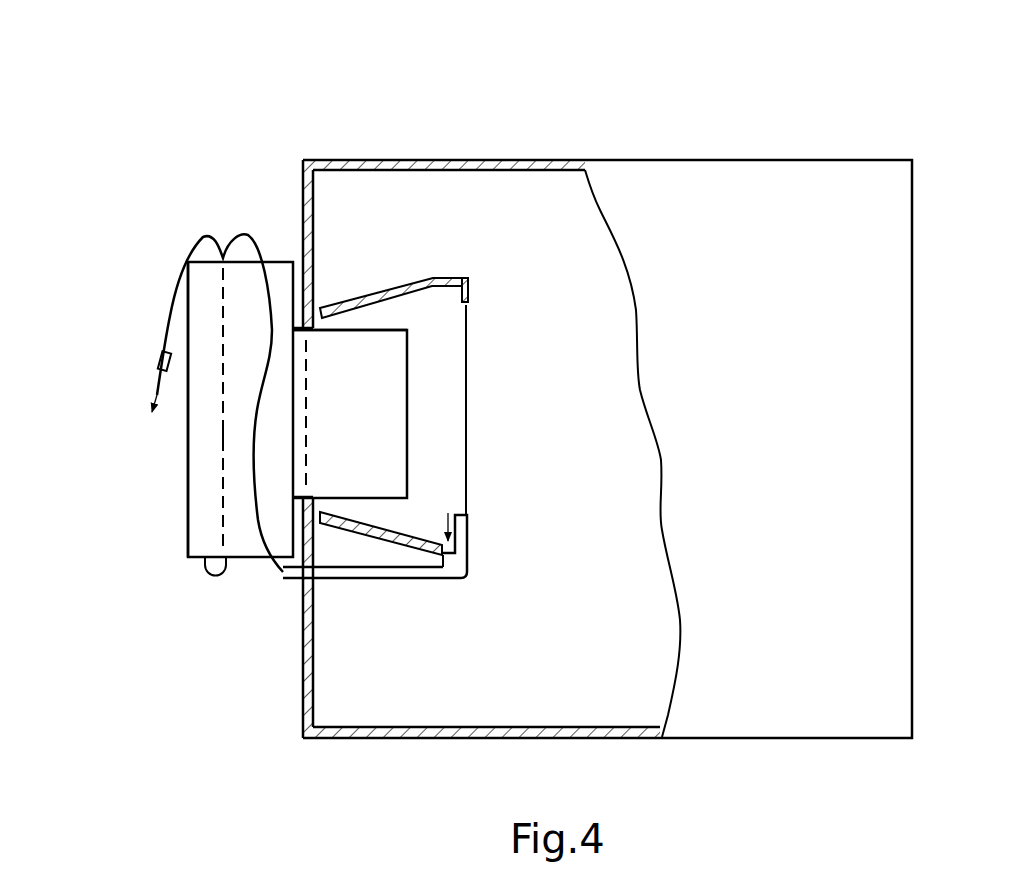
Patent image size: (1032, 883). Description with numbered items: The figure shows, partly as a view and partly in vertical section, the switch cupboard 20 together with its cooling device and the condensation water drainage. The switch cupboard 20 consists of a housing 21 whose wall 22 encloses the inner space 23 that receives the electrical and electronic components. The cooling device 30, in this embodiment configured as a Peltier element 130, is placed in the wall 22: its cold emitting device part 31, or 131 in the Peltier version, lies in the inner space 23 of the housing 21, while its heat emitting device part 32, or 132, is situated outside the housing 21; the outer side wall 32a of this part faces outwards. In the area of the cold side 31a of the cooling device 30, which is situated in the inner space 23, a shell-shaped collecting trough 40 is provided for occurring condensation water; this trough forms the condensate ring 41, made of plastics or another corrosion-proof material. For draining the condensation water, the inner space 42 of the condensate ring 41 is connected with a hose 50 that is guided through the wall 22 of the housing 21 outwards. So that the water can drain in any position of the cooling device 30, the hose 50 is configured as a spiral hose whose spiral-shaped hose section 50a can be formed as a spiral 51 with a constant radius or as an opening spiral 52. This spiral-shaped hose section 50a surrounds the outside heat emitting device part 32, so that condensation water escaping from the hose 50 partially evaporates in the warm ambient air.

The switch cupboard 20 is at (528, 381).
The housing 21 is at (810, 220).
The wall 22 is at (305, 220).
The inner space 23 is at (610, 701).
The cooling device 30 is at (165, 462).
The Peltier element 130 is at (165, 462).
The cold emitting device part 31 is at (450, 392).
The cold emitting device part 131 is at (450, 392).
The cold side 31a is at (408, 356).
The heat emitting device part 32 is at (165, 419).
The heat emitting device part 132 is at (165, 419).
The side wall of coil body 32a is at (187, 458).
The collecting trough 40 is at (468, 312).
The condensate ring 41 is at (462, 276).
The inner space 42 is at (451, 425).
The hose 50 is at (414, 580).
The spiral-shaped hose section 50a is at (249, 528).
The spiral 51 is at (222, 425).
The opening spiral 52 is at (222, 430).